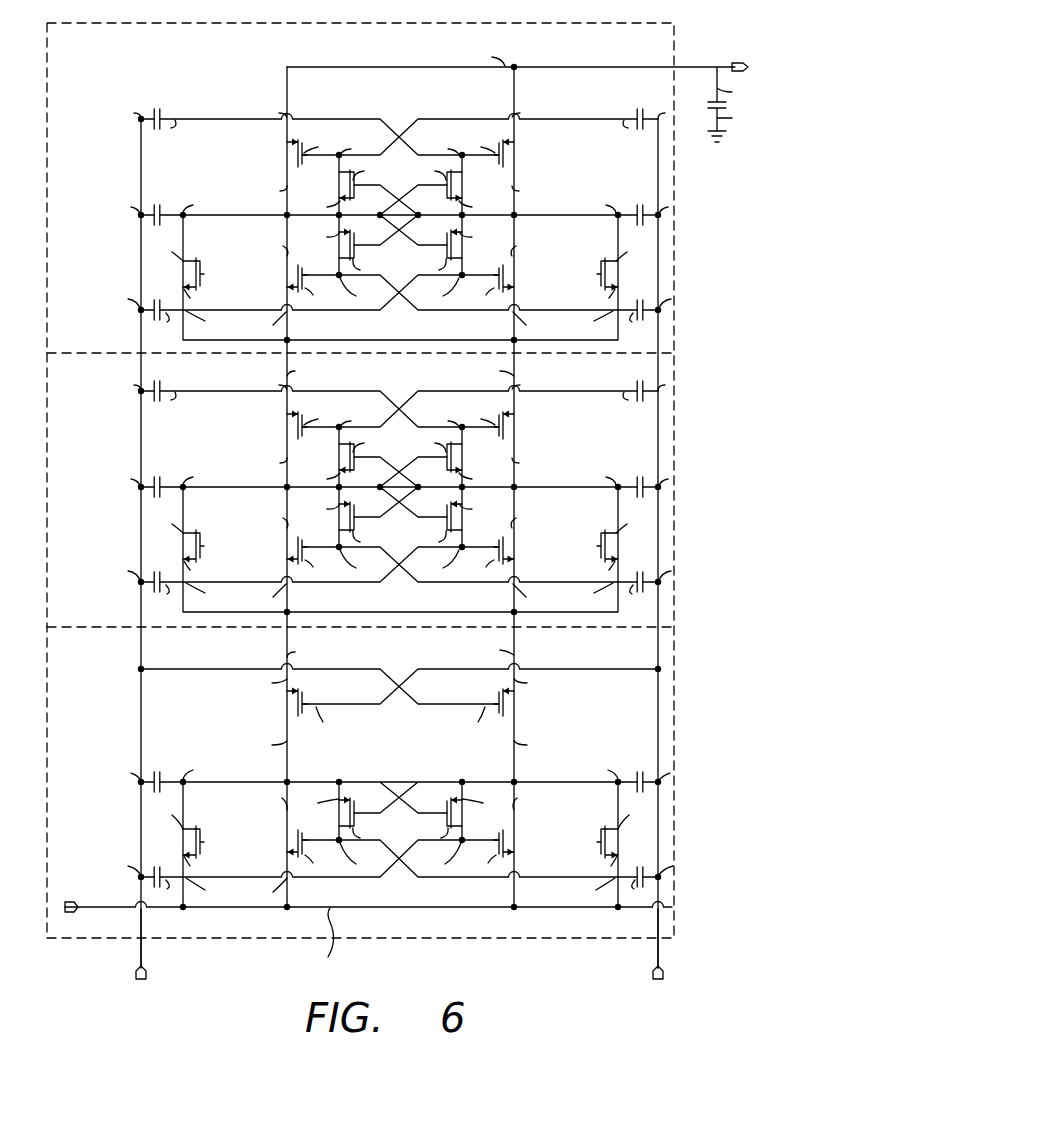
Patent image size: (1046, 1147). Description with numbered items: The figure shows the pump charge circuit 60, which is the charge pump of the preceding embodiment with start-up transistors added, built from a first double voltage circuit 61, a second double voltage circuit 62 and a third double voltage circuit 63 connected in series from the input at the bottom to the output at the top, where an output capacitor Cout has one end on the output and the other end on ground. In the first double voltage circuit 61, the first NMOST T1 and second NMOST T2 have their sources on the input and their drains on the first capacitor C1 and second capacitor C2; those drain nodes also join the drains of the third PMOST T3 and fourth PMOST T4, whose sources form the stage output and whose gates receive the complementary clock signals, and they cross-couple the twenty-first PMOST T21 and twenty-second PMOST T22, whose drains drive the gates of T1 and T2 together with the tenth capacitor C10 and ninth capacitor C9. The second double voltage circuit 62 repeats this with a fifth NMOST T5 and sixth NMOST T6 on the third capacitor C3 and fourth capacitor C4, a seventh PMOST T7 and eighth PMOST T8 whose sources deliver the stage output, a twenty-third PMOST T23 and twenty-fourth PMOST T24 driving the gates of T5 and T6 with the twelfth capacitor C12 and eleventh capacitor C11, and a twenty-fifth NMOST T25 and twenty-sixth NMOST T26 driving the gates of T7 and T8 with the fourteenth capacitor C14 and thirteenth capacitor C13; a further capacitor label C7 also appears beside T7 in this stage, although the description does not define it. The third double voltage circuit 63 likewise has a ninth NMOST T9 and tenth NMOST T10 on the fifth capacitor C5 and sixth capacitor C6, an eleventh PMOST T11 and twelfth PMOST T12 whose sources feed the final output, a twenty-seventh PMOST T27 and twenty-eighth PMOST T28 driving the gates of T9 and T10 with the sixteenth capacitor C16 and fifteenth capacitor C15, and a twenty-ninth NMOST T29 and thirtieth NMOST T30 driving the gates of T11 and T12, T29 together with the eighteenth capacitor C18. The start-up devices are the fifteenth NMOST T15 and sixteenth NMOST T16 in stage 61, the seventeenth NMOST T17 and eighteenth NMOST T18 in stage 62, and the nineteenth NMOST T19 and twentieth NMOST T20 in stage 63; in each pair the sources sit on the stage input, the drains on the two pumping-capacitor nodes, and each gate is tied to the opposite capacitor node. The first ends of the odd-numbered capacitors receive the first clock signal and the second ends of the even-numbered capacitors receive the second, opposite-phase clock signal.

The pump charge circuit 60 is at (413, 505).
The first double voltage circuit 61 is at (388, 774).
The second double voltage circuit 62 is at (407, 488).
The third double voltage circuit 63 is at (407, 219).
The first NMOST T1 is at (284, 847).
The second NMOST T2 is at (512, 847).
The third PMOST T3 is at (287, 703).
The fourth PMOST T4 is at (514, 703).
The fifth NMOST T5 is at (284, 552).
The sixth NMOST T6 is at (512, 552).
The seventh PMOST T7 is at (287, 426).
The eighth PMOST T8 is at (513, 426).
The ninth NMOST T9 is at (284, 280).
The tenth NMOST T10 is at (517, 280).
The eleventh PMOST T11 is at (287, 154).
The twelfth PMOST T12 is at (518, 154).
The fifteenth NMOST T15 is at (185, 842).
The sixteenth NMOST T16 is at (614, 842).
The seventeenth NMOST T17 is at (185, 546).
The eighteenth NMOST T18 is at (614, 546).
The nineteenth NMOST T19 is at (185, 274).
The twentieth NMOST T20 is at (614, 274).
The twenty-first PMOST T21 is at (337, 816).
The twenty-second PMOST T22 is at (465, 816).
The twenty-third PMOST T23 is at (336, 524).
The twenty-fourth PMOST T24 is at (465, 524).
The twenty-fifth NMOST T25 is at (336, 458).
The twenty-sixth NMOST T26 is at (461, 458).
The twenty-seventh PMOST T27 is at (336, 252).
The twenty-eighth PMOST T28 is at (465, 252).
The twenty-ninth NMOST T29 is at (336, 186).
The thirtieth NMOST T30 is at (461, 186).
The first capacitor C1 is at (156, 775).
The second capacitor C2 is at (642, 775).
The third capacitor C3 is at (156, 481).
The fourth capacitor C4 is at (642, 481).
The fifth capacitor C5 is at (156, 209).
The sixth capacitor C6 is at (642, 209).
The capacitor C7 is at (156, 112).
The ninth capacitor C9 is at (160, 869).
The tenth capacitor C10 is at (645, 869).
The eleventh capacitor C11 is at (165, 574).
The twelfth capacitor C12 is at (645, 574).
The thirteenth capacitor C13 is at (161, 384).
The fourteenth capacitor C14 is at (643, 385).
The fifteenth capacitor C15 is at (165, 302).
The sixteenth capacitor C16 is at (645, 302).
The eighteenth capacitor C18 is at (643, 113).
The output capacitor Cout is at (755, 105).